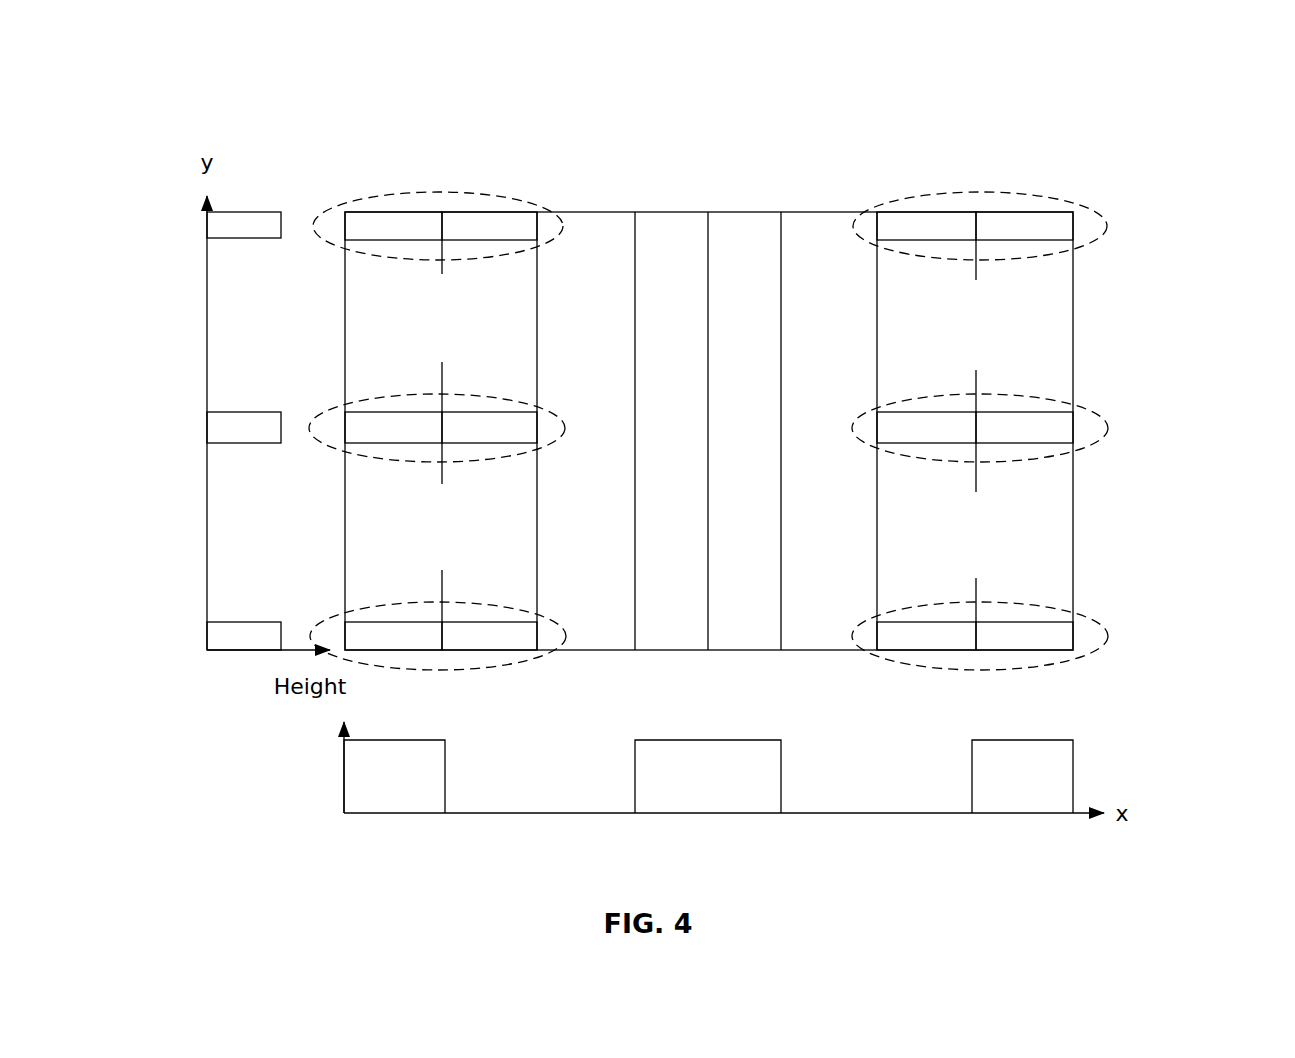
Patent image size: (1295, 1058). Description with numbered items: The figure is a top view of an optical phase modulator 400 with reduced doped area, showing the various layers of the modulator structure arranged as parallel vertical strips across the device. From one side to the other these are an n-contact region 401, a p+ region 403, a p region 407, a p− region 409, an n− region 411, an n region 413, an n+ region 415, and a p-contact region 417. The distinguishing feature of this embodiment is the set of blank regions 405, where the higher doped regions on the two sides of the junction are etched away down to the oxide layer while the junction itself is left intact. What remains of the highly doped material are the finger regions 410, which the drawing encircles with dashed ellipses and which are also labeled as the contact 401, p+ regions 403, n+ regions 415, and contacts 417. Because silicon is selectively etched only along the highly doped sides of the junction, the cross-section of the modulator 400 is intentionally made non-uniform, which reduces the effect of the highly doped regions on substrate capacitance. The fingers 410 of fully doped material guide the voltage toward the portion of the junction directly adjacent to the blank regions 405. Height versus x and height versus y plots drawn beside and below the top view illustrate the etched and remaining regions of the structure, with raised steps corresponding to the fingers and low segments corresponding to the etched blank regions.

The modulator 400 is at (192, 102).
The n-contact region 401 is at (393, 431).
The p+ region 403 is at (489, 431).
The blank regions 405 is at (708, 431).
The p region 407 is at (586, 431).
The p− region 409 is at (678, 431).
The finger regions 410 is at (372, 184).
The n− region 411 is at (748, 431).
The n region 413 is at (841, 431).
The n+ region 415 is at (926, 431).
The p-contact region 417 is at (1024, 431).